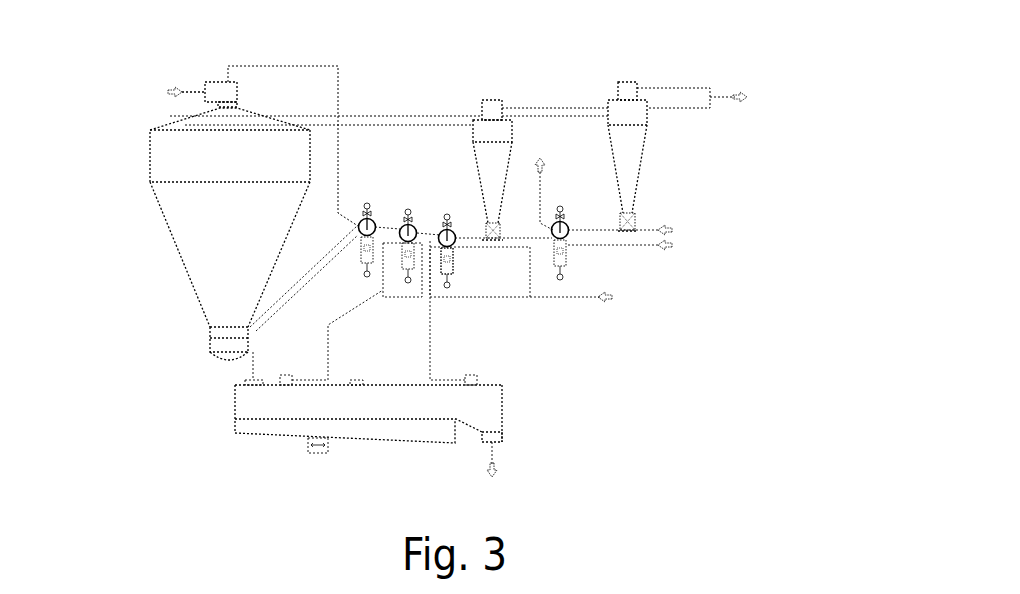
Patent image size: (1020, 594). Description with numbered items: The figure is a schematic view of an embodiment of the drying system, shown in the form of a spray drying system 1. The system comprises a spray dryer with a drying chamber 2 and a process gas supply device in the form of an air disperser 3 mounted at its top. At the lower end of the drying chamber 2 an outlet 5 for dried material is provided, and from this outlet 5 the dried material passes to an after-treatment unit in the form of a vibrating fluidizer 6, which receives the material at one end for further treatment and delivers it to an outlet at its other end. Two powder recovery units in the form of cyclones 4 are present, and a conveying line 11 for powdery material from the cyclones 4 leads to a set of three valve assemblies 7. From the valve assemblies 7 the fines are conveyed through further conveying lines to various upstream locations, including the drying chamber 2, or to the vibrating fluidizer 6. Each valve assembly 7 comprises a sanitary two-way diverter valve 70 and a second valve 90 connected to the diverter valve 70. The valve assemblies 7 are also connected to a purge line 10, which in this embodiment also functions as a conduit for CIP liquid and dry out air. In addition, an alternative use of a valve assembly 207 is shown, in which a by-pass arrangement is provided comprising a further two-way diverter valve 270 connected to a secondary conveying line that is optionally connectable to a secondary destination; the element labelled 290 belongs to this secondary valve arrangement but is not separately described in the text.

The spray drying system 1 is at (112, 158).
The drying chamber 2 is at (190, 247).
The air disperser 3 is at (223, 83).
The cyclones 4 is at (482, 158).
The outlet 5 is at (252, 335).
The vibrating fluidizer 6 is at (392, 432).
The valve assemblies 7 is at (391, 206).
The two-way diverter valve 70 is at (455, 241).
The second valve 90 is at (456, 264).
The purge line 10 is at (547, 297).
The conveying line 11 is at (527, 240).
The valve assembly 207 is at (590, 215).
The further two-way diverter valve 270 is at (566, 224).
The secondary valve body 290 is at (570, 267).